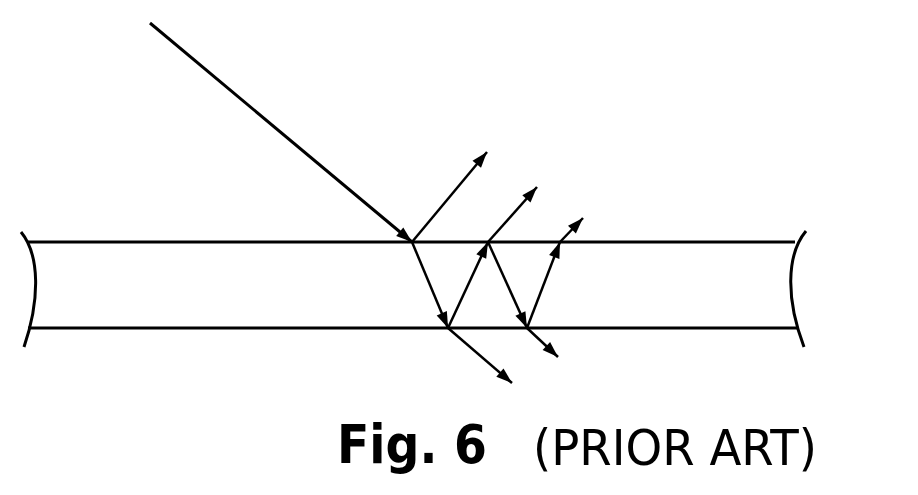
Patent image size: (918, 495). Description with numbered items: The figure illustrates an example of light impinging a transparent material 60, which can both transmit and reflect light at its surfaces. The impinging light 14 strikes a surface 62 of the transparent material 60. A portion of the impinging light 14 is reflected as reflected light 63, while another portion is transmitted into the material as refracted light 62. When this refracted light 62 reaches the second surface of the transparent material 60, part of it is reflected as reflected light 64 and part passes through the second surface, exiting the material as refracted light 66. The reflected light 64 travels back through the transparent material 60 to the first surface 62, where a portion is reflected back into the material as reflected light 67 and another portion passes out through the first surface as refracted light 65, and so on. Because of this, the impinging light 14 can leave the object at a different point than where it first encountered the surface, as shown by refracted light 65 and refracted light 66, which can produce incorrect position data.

The impinging light 14 is at (215, 78).
The transparent material 60 is at (413, 289).
The surface 62 is at (744, 240).
The reflected light 63 is at (461, 171).
The reflected light 64 is at (464, 291).
The refracted light 65 is at (512, 205).
The refracted light 66 is at (464, 348).
The reflected light 67 is at (525, 291).